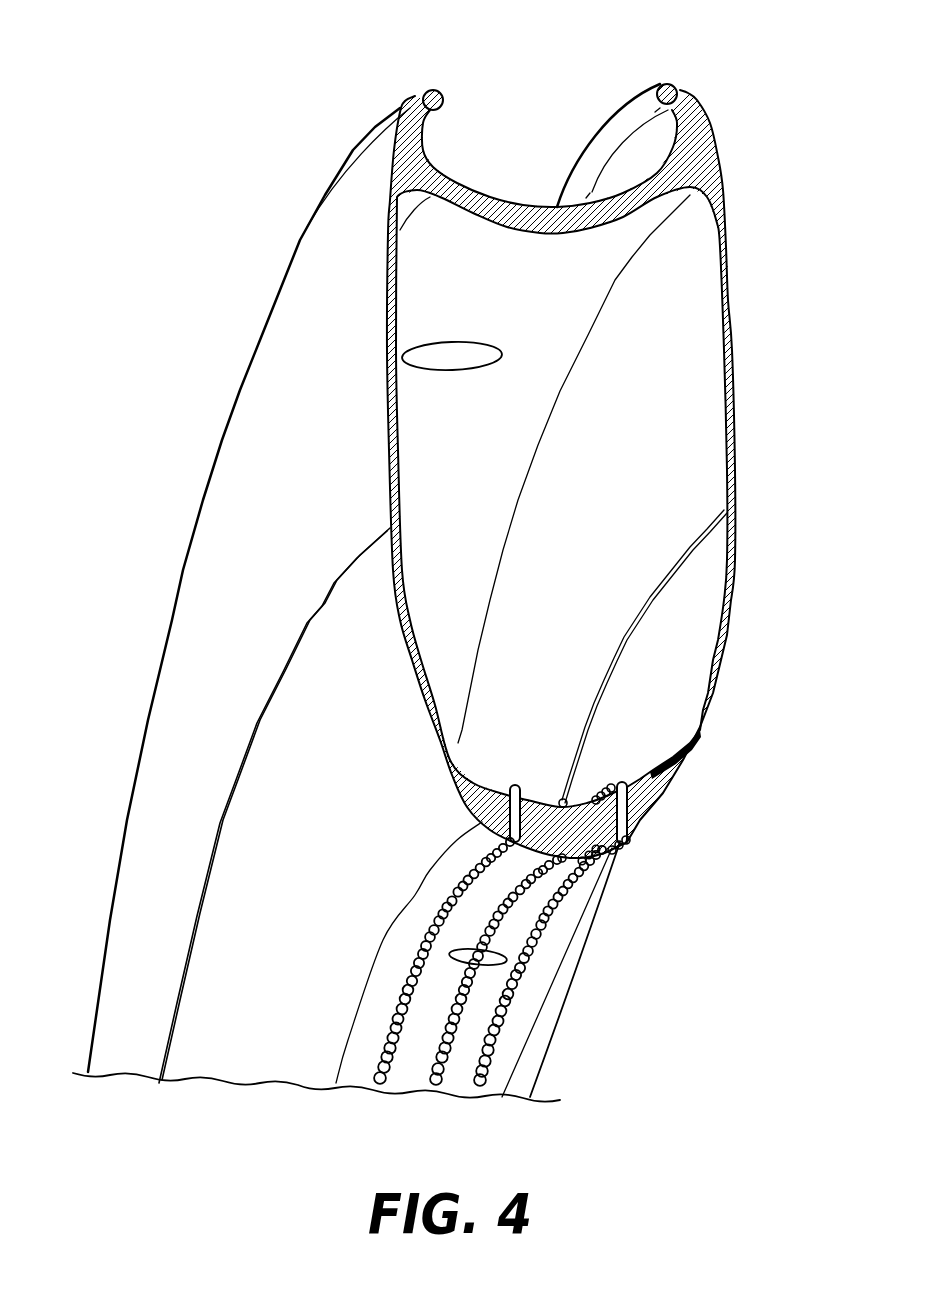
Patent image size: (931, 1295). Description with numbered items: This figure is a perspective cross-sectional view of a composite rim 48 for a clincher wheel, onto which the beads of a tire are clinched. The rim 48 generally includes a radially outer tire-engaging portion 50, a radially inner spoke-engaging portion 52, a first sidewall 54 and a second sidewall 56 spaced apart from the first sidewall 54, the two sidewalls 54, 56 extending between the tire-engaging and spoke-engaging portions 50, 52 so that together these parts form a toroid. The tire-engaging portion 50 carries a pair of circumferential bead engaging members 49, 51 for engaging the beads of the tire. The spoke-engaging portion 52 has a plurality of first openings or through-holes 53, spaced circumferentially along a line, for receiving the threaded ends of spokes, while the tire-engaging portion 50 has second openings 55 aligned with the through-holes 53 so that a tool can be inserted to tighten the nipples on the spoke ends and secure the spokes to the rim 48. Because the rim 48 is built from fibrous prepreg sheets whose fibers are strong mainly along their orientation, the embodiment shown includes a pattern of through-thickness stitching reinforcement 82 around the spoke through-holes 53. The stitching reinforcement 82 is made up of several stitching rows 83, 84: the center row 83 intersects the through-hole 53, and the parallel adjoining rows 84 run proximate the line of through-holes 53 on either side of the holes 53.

The rim 48 is at (224, 243).
The circumferential bead engaging member 49 is at (433, 91).
The tire-engaging portion 50 is at (385, 98).
The circumferential bead engaging member 51 is at (681, 87).
The spoke-engaging portion 52 is at (686, 797).
The through-hole 53 is at (590, 834).
The first sidewall 54 is at (389, 441).
The second opening 55 is at (457, 362).
The second sidewall 56 is at (737, 417).
The through-thickness stitching reinforcement 82 is at (384, 1012).
The center stitching row 83 is at (520, 910).
The adjoining stitching row 84 is at (442, 923).